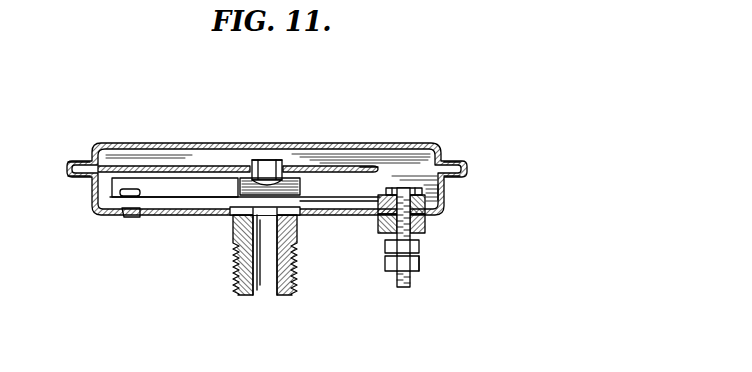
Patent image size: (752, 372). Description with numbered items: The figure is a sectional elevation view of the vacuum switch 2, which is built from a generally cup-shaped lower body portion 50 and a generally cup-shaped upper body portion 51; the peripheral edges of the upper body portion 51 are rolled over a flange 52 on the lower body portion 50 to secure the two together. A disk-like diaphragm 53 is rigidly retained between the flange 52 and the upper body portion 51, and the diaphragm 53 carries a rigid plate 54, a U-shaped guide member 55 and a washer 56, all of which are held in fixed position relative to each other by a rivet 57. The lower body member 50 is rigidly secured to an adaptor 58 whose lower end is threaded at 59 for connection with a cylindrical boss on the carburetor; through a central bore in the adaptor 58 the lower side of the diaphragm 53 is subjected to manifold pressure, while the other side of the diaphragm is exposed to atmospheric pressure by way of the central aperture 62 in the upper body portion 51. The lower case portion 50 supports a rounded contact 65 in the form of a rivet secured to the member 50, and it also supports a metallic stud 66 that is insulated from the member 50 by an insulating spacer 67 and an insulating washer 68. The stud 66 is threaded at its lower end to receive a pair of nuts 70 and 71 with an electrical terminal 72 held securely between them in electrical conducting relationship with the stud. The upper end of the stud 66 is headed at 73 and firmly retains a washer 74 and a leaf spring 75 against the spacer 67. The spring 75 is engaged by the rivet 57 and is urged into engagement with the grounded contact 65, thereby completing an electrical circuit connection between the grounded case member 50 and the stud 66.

The vacuum switch 2 is at (141, 132).
The lower body portion 50 is at (444, 212).
The upper body portion 51 is at (461, 166).
The flange 52 is at (76, 178).
The diaphragm 53 is at (380, 167).
The rigid plate 54 is at (208, 177).
The U-shaped guide member 55 is at (300, 188).
The washer 56 is at (248, 164).
The rivet 57 is at (284, 165).
The adaptor 58 is at (233, 233).
The threaded lower end 59 is at (236, 275).
The central aperture 62 is at (263, 159).
The rounded contact 65 is at (120, 213).
The metallic stud 66 is at (402, 284).
The insulating spacer 67 is at (379, 214).
The insulating washer 68 is at (426, 230).
The nut 70 is at (386, 250).
The nut 71 is at (386, 266).
The electrical terminal 72 is at (420, 262).
The headed upper end 73 is at (440, 188).
The washer 74 is at (388, 191).
The leaf spring 75 is at (336, 197).